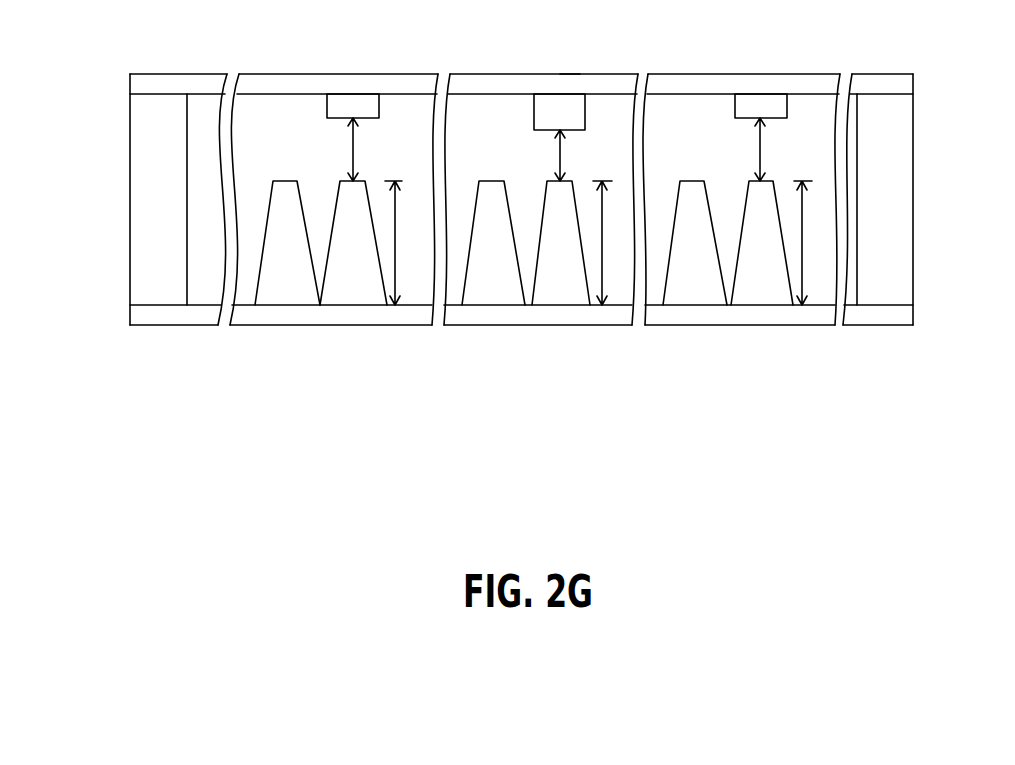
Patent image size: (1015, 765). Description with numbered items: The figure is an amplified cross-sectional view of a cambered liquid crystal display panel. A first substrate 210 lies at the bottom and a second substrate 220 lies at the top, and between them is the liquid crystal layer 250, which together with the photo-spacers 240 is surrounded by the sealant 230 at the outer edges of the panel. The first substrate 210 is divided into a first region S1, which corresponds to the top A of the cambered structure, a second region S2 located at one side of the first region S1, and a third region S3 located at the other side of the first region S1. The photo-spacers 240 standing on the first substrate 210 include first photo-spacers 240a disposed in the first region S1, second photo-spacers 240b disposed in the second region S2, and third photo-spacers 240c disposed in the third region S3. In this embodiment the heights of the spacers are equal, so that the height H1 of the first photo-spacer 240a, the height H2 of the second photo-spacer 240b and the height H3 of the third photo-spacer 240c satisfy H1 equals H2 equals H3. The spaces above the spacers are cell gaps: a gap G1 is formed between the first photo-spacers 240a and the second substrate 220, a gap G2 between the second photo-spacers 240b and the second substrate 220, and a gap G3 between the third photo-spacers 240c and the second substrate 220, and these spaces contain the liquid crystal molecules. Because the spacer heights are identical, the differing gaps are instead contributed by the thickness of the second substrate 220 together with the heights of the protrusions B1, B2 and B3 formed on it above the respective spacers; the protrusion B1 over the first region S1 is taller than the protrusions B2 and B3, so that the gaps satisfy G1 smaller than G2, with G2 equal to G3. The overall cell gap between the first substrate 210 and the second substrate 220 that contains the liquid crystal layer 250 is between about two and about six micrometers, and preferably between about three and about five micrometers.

The first substrate 210 is at (888, 316).
The second substrate 220 is at (888, 85).
The sealant 230 is at (890, 237).
The liquid crystal layer 250 is at (848, 148).
The photo-spacers 240 is at (524, 314).
The first photo-spacer 240a is at (560, 287).
The second photo-spacer 240b is at (347, 290).
The third photo-spacer 240c is at (728, 287).
The protrusion B1 is at (551, 105).
The protrusion B2 is at (352, 105).
The protrusion B3 is at (763, 105).
The top of the cambered structure A is at (566, 72).
The gap G1 is at (570, 155).
The gap G2 is at (365, 149).
The gap G3 is at (772, 149).
The height of the first photo-spacer H1 is at (613, 243).
The height of the second photo-spacer H2 is at (406, 243).
The height of the third photo-spacer H3 is at (812, 243).
The first region S1 is at (632, 453).
The second region S2 is at (430, 453).
The third region S3 is at (833, 453).